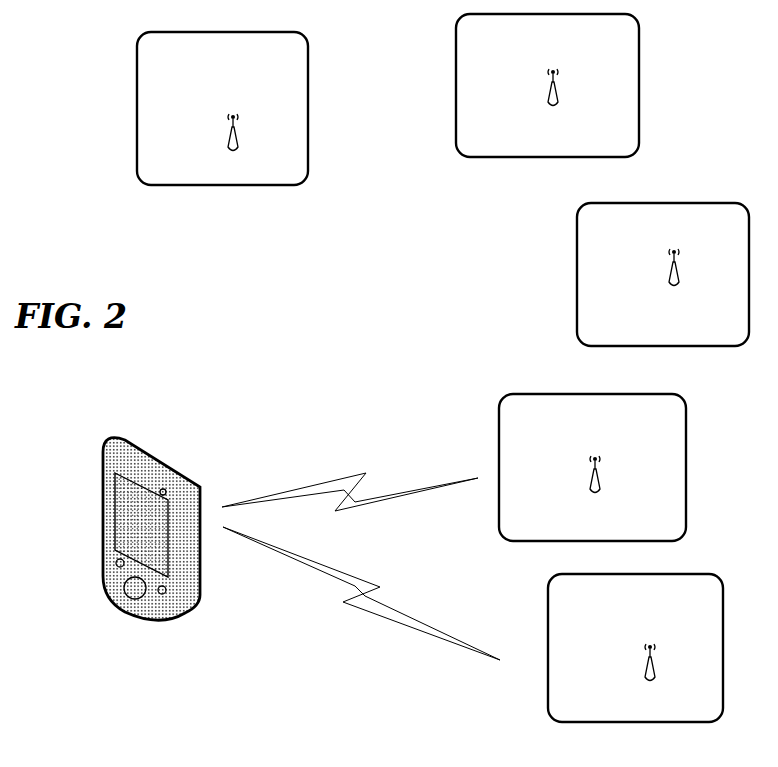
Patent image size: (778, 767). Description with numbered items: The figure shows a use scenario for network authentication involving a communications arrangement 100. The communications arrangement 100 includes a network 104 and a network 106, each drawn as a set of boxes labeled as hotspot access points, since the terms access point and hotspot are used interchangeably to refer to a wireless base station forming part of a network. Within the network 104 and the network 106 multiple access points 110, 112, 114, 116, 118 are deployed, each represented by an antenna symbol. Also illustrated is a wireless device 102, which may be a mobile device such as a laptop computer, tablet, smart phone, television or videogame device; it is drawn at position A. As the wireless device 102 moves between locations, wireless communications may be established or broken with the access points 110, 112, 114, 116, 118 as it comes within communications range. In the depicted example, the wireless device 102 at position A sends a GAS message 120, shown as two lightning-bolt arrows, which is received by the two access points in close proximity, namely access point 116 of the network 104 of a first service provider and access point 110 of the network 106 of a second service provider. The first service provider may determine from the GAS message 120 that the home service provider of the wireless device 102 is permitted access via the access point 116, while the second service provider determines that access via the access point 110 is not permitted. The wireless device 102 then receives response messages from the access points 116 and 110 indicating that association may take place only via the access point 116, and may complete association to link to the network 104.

The communications arrangement 100 is at (385, 332).
The wireless device 102 is at (123, 442).
The network 104 is at (563, 146).
The network 106 is at (237, 171).
The access point 110 is at (576, 671).
The access point 112 is at (599, 278).
The access point 114 is at (159, 140).
The access point 116 is at (510, 498).
The access point 118 is at (467, 107).
The GAS message 120 is at (280, 500).